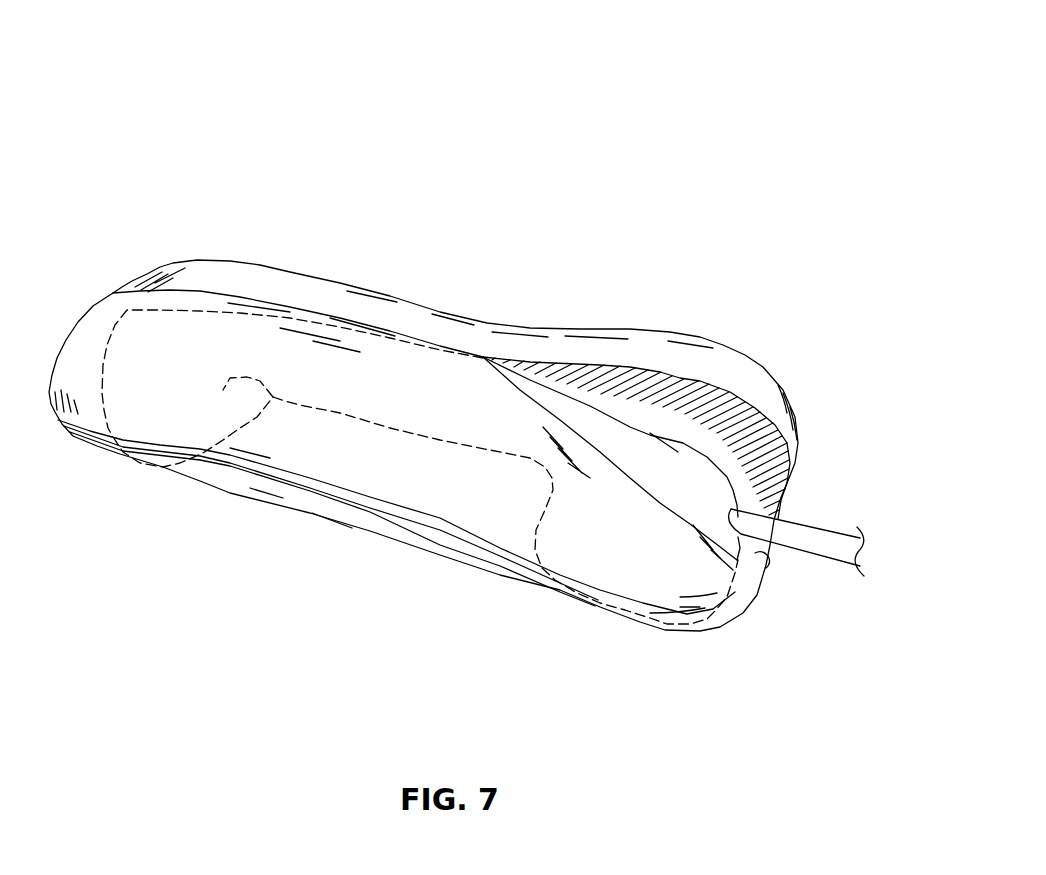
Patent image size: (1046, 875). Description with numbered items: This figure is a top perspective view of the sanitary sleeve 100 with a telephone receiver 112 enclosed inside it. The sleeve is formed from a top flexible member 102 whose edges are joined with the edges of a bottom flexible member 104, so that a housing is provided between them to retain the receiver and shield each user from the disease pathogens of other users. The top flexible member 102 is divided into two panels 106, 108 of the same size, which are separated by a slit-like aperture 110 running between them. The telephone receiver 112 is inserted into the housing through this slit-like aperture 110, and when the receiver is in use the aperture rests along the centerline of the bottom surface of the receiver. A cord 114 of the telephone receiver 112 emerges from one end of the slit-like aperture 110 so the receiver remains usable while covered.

The sanitary sleeve 100 is at (446, 74).
The top flexible member 102 is at (283, 250).
The bottom flexible member 104 is at (170, 560).
The first panel 106 is at (409, 283).
The second panel 108 is at (363, 508).
The slit-like aperture 110 is at (745, 340).
The telephone receiver 112 is at (587, 361).
The cord 114 is at (828, 507).